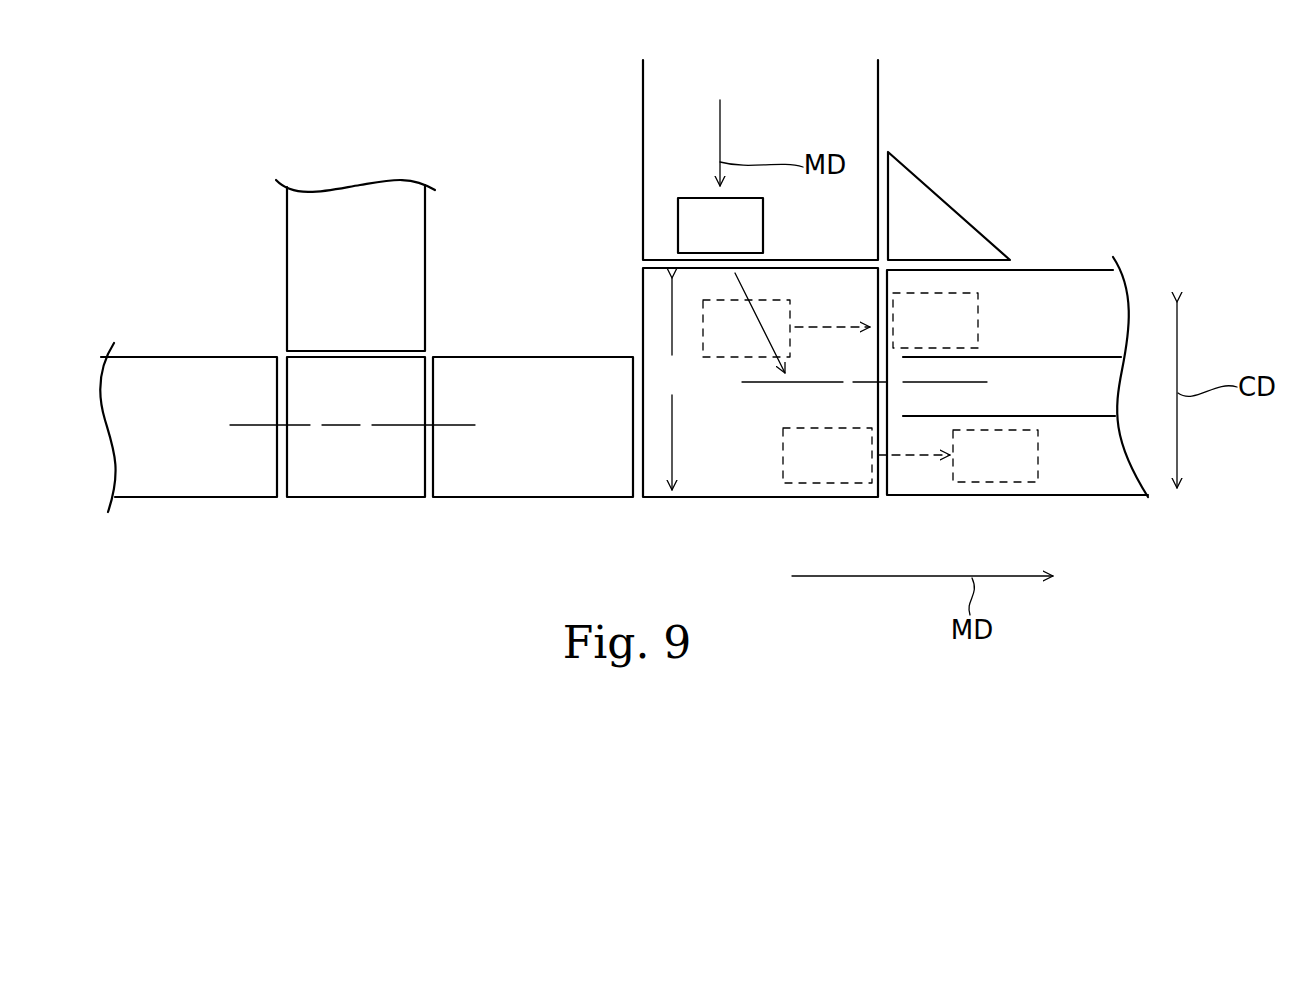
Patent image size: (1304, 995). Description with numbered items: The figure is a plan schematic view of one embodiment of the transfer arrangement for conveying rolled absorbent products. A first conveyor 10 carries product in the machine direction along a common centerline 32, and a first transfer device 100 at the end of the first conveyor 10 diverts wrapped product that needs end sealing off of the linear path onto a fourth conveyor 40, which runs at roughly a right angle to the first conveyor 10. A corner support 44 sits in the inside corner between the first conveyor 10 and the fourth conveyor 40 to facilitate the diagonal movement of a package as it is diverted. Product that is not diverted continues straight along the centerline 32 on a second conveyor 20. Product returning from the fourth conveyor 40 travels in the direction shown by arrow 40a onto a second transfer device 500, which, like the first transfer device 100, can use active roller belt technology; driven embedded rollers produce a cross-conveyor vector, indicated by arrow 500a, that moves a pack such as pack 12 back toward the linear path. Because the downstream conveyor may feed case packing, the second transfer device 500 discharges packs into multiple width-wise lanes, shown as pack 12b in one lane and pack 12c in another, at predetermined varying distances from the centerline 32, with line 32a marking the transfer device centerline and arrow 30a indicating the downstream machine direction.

The first conveyor 10 is at (170, 483).
The first transfer device 100 is at (338, 473).
The second conveyor 20 is at (513, 483).
The fourth conveyor 40 is at (297, 275).
The supply direction of discrete pieces 40a is at (720, 140).
The discrete piece 12 is at (720, 225).
The discrete piece in first lane 12b is at (840, 325).
The discrete piece in third lane 12c is at (910, 455).
The common centerline 32 is at (460, 423).
The center line of transfer zone 32a is at (765, 382).
The corner support 44 is at (930, 222).
The second transfer device 500 is at (700, 483).
The cross-conveyor vector direction arrow 500a is at (735, 290).
The machine direction travel of web 30a is at (882, 578).